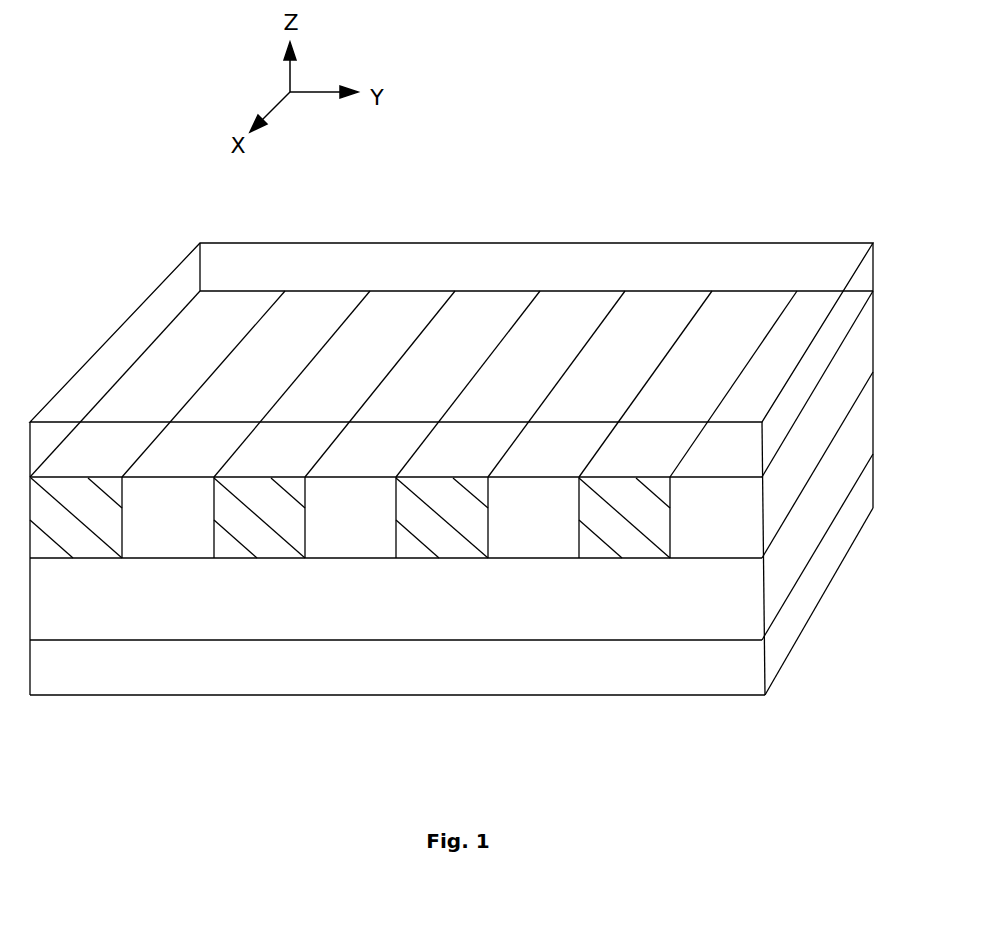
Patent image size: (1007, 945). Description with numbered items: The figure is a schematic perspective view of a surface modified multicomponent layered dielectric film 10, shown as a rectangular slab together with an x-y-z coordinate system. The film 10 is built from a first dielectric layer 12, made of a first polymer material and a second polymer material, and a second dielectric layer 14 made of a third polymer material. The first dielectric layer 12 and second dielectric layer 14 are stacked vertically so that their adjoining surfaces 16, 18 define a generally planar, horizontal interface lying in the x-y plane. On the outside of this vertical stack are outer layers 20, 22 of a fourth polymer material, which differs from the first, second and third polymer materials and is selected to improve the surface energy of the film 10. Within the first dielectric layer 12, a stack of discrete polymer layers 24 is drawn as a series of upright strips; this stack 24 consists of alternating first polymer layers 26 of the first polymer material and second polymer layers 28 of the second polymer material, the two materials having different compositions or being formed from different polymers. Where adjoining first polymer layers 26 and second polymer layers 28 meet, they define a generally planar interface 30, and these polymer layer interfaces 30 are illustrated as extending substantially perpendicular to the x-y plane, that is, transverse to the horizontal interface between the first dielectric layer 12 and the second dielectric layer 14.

The surface modified multicomponent layered dielectric film 10 is at (530, 178).
The first dielectric layer 12 is at (843, 383).
The second dielectric layer 14 is at (827, 502).
The adjoining surface 16 is at (788, 513).
The adjoining surface 18 is at (820, 457).
The outer layer 20 is at (782, 642).
The outer layer 22 is at (825, 338).
The stack of discrete polymer layers 24 is at (153, 341).
The first polymer layer 26 is at (198, 335).
The second polymer layer 28 is at (278, 300).
The planar interface 30 is at (298, 335).